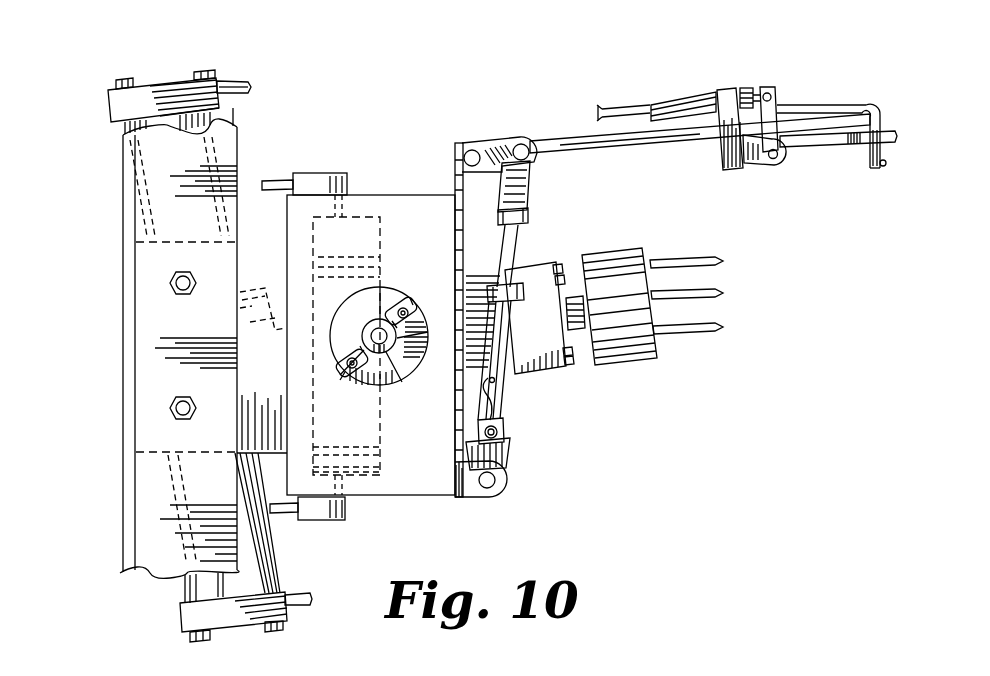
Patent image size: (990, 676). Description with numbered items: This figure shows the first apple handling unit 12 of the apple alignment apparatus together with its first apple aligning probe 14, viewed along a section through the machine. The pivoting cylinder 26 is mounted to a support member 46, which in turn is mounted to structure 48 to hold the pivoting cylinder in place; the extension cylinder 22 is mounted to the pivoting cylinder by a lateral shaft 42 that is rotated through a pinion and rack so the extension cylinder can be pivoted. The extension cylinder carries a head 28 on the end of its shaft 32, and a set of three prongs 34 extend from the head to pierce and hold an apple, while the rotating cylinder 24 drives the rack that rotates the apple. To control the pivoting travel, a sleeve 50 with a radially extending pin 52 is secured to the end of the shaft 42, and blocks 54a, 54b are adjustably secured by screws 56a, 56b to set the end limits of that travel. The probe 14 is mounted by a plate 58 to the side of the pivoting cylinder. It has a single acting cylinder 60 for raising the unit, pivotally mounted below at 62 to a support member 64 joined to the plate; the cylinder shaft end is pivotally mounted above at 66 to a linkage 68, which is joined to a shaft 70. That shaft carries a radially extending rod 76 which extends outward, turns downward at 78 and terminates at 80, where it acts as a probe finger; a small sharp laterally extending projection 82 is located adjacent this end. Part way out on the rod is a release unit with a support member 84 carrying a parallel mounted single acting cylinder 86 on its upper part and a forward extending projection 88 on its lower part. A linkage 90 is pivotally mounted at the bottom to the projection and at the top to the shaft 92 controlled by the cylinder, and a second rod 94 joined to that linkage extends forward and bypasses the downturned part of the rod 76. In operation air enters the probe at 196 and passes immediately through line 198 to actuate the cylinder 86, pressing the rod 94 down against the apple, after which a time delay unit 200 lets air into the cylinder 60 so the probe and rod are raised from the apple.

The first apple handling unit 12 is at (163, 78).
The first apple aligning probe 14 is at (517, 132).
The extension cylinder 22 is at (474, 274).
The rotating cylinder 24 is at (240, 100).
The pivoting cylinder 26 is at (385, 186).
The head 28 is at (607, 250).
The shaft 32 is at (568, 296).
The prongs 34 is at (688, 328).
The shaft 42 is at (396, 380).
The support member 46 is at (256, 247).
The structure 48 is at (122, 288).
The sleeve 50 is at (408, 370).
The radially extending pin 52 is at (356, 334).
The block 54a is at (332, 347).
The block 54b is at (388, 315).
The screw 56a is at (354, 380).
The screw 56b is at (407, 309).
The plate 58 is at (438, 178).
The single acting cylinder 60 is at (520, 336).
The pivot mounting 62 is at (497, 483).
The support member 64 is at (484, 500).
The pivot mounting 66 is at (526, 144).
The linkage 68 is at (508, 173).
The shaft 70 is at (475, 148).
The radially extending rod 76 is at (620, 150).
The downward turn 78 is at (876, 105).
The end 80 is at (880, 168).
The laterally extending projection 82 is at (886, 161).
The support member 84 is at (735, 172).
The single acting cylinder 86 is at (677, 102).
The forward extending projection 88 is at (760, 170).
The linkage 90 is at (780, 97).
The shaft 92 is at (752, 90).
The second rod 94 is at (834, 147).
The air inlet 196 is at (508, 430).
The line 198 is at (622, 108).
The time delay unit 200 is at (510, 383).